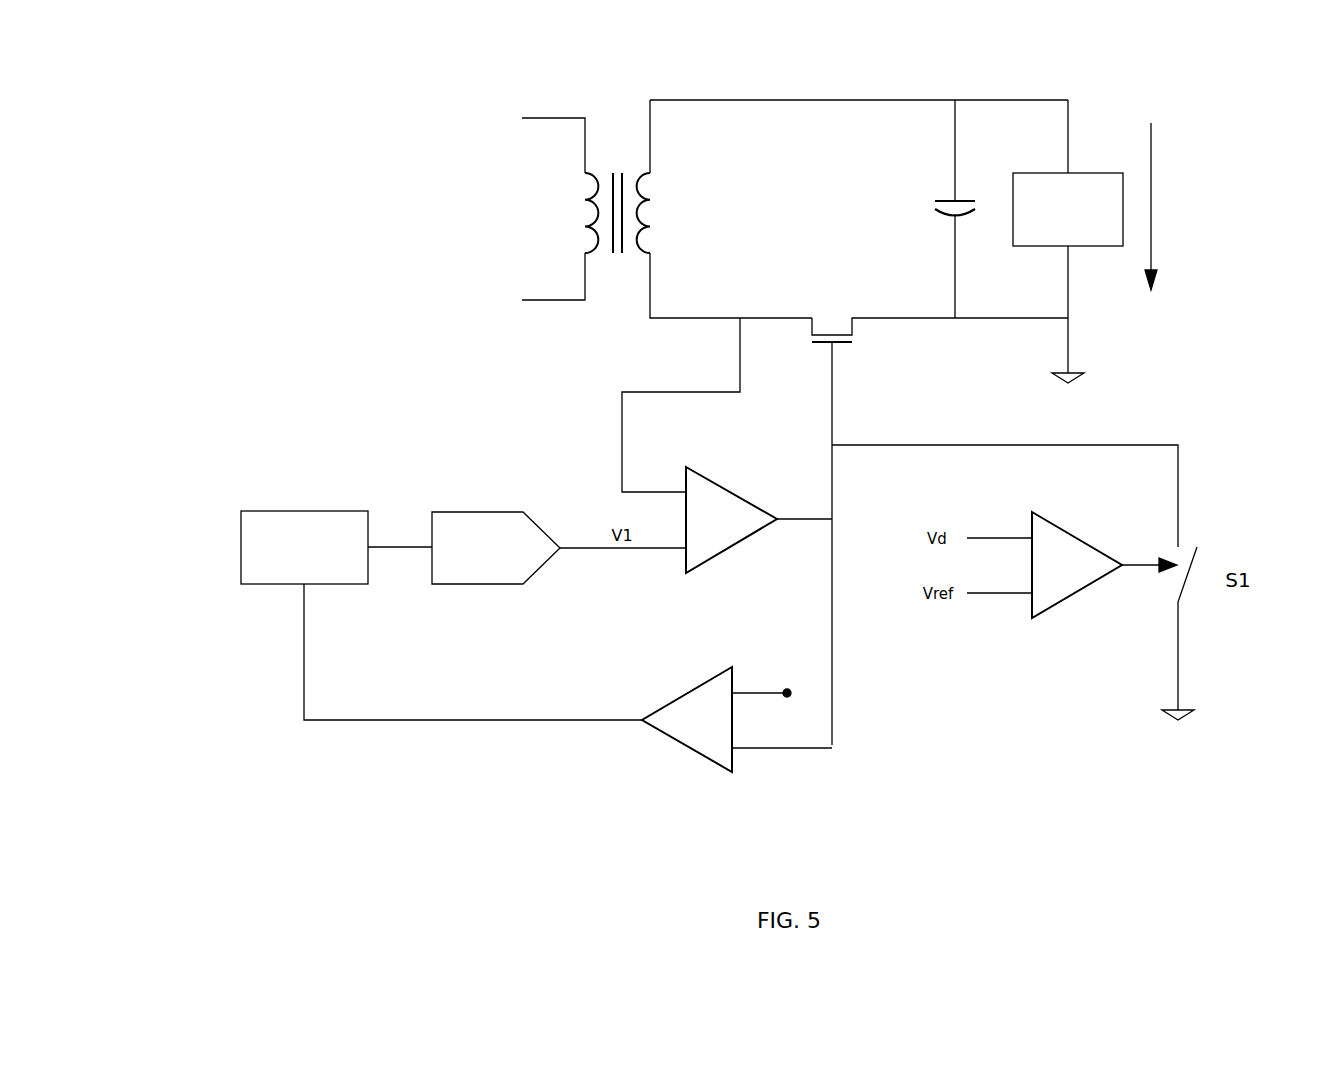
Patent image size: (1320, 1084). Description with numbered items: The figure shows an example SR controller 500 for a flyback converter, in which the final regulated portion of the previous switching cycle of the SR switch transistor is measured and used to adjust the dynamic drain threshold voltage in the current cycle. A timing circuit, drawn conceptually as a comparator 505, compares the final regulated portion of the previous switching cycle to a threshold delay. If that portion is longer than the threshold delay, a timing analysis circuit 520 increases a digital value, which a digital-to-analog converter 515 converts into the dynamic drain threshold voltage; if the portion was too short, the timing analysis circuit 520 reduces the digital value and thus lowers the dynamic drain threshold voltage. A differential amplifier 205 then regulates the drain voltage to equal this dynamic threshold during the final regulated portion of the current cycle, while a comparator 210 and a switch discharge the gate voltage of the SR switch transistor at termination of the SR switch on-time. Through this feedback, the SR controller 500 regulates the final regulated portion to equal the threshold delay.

The SR controller 500 is at (492, 392).
The digital-to-analog converter (DAC) 515 is at (478, 512).
The timing analysis circuit 520 is at (241, 565).
The differential amplifier 205 is at (740, 545).
The timing circuit (comparator) 505 is at (680, 745).
The comparator 210 is at (1087, 590).